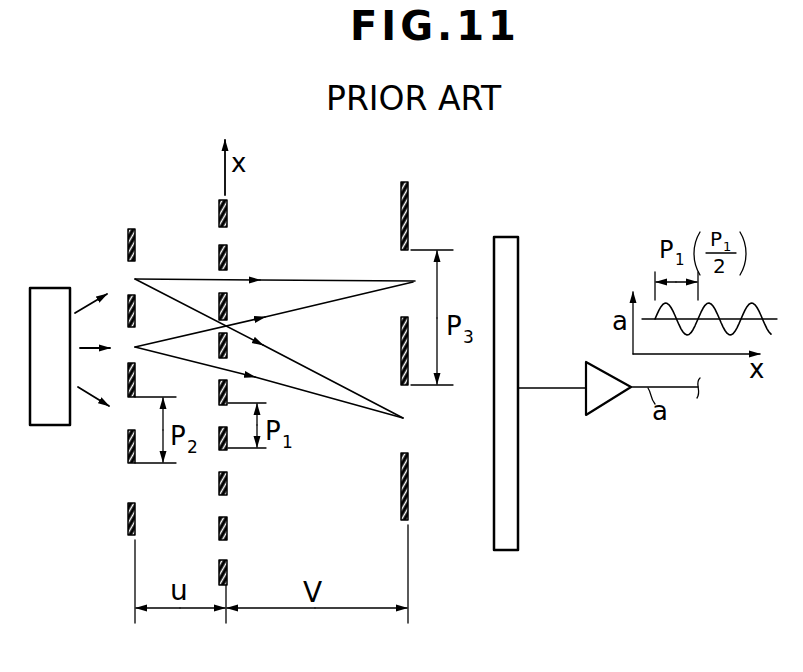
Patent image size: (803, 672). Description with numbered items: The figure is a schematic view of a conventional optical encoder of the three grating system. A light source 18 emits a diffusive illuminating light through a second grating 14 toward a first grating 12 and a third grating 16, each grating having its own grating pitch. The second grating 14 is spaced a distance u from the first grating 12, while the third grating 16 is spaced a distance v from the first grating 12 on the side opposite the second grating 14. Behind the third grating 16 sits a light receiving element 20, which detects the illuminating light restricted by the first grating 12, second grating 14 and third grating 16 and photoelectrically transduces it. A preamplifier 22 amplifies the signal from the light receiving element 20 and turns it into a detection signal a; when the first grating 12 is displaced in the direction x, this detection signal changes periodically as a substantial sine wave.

The first grating 12 is at (219, 205).
The second grating 14 is at (128, 240).
The third grating 16 is at (400, 209).
The light source 18 is at (51, 425).
The light receiving element 20 is at (505, 237).
The preamplifier 22 is at (612, 402).